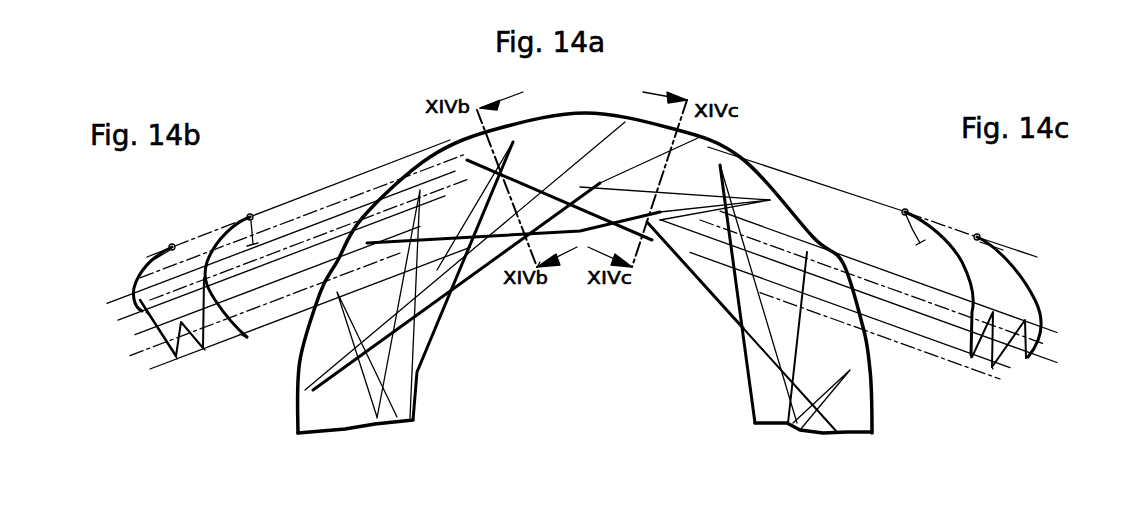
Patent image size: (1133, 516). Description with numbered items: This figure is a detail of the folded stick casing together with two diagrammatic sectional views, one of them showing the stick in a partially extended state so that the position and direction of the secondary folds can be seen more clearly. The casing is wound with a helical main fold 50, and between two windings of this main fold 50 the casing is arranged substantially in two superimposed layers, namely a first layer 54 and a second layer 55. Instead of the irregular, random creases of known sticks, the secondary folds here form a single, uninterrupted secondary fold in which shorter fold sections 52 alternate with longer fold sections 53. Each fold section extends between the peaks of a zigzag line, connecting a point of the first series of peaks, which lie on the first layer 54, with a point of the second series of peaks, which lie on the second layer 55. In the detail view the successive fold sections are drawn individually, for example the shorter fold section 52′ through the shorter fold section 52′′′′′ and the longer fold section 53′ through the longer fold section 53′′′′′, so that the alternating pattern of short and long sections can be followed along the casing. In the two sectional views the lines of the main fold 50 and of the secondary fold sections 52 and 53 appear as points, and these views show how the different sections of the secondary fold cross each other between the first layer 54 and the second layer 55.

In FIG. 14A, the helical main fold 50 is at (403, 187).
In FIG. 14B, the helical main fold 50 is at (170, 243).
In FIG. 14C, the helical main fold 50 is at (906, 209).
In FIG. 14A, the shorter fold sections 52 is at (584, 256).
In FIG. 14B, the shorter fold sections 52 is at (127, 273).
In FIG. 14C, the shorter fold sections 52 is at (1042, 320).
In FIG. 14A, the shorter fold section 52′ is at (473, 200).
In FIG. 14B, the shorter fold section 52′ is at (203, 273).
In FIG. 14A, the shorter fold section 52′′′′′ is at (753, 243).
In FIG. 14A, the longer fold sections 53 is at (593, 287).
In FIG. 14B, the longer fold sections 53 is at (178, 362).
In FIG. 14C, the longer fold sections 53 is at (1029, 386).
In FIG. 14A, the longer fold section 53′ is at (437, 337).
In FIG. 14B, the longer fold section 53′ is at (240, 334).
In FIG. 14A, the longer fold section 53′′′′′ is at (715, 303).
In FIG. 14C, the longer fold section 53′′′′′ is at (1026, 358).
In FIG. 14B, the first layer 54 is at (137, 272).
In FIG. 14C, the first layer 54 is at (1038, 298).
In FIG. 14B, the second layer 55 is at (222, 240).
In FIG. 14C, the second layer 55 is at (960, 277).